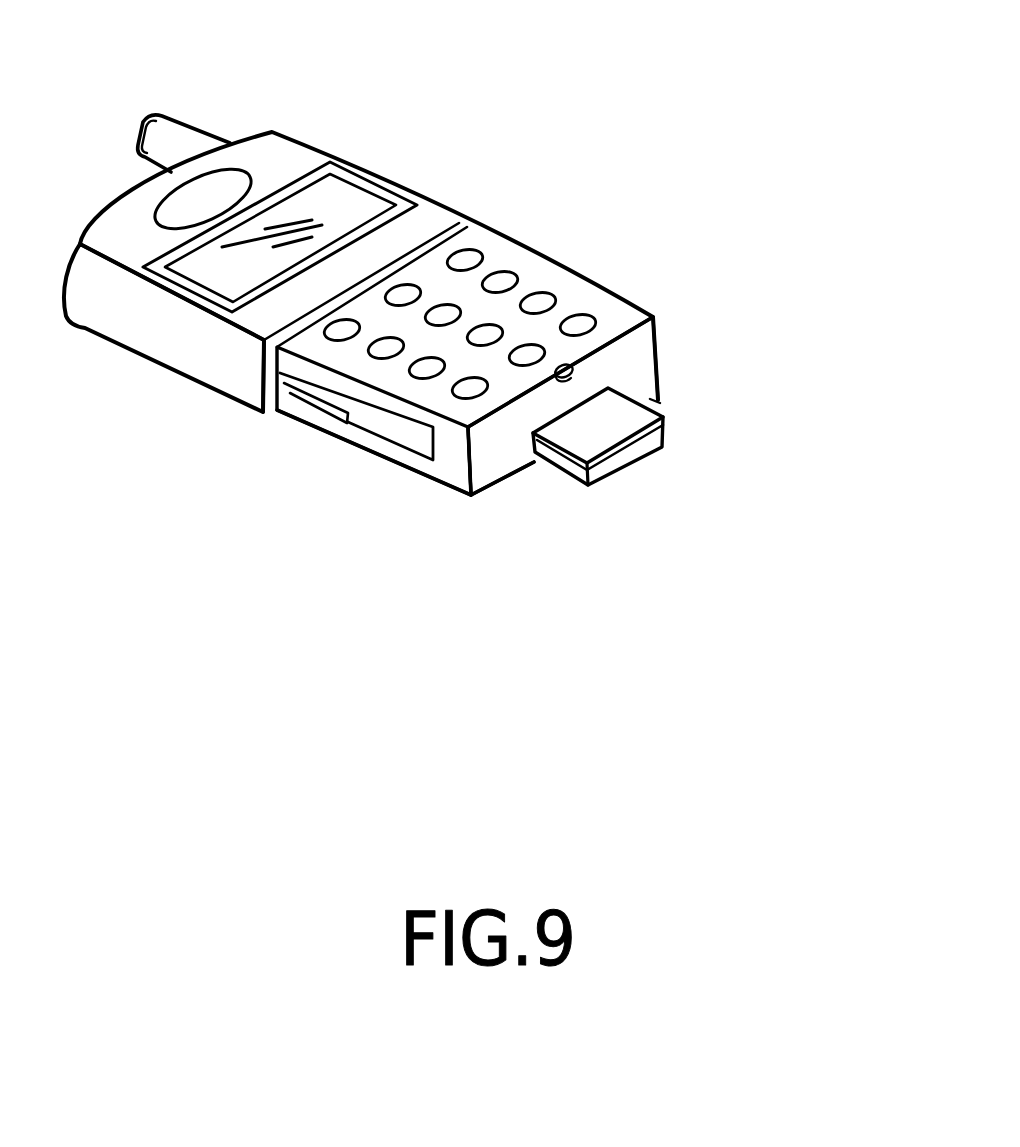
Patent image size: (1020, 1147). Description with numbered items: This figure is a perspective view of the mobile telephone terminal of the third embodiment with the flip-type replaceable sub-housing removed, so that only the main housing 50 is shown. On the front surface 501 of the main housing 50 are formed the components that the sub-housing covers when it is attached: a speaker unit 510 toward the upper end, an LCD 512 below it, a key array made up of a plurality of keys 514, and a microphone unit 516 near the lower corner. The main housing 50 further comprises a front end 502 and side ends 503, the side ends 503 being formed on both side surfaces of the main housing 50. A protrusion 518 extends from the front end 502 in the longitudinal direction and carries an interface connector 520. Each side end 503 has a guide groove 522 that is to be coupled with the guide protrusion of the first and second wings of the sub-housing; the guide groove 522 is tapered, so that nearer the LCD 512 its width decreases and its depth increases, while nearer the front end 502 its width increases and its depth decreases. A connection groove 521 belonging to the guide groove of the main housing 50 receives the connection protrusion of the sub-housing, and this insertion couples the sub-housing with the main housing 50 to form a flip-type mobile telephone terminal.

The main housing 50 is at (403, 277).
The front surface 501 is at (280, 162).
The front end 502 is at (487, 460).
The side ends 503 is at (449, 462).
The speaker unit 510 is at (205, 192).
The LCD 512 is at (333, 200).
The keys 514 is at (472, 258).
The microphone unit 516 is at (566, 368).
The protrusion 518 is at (660, 403).
The interface connector 520 is at (662, 447).
The connection groove 521 is at (262, 414).
The guide groove 522 is at (352, 412).